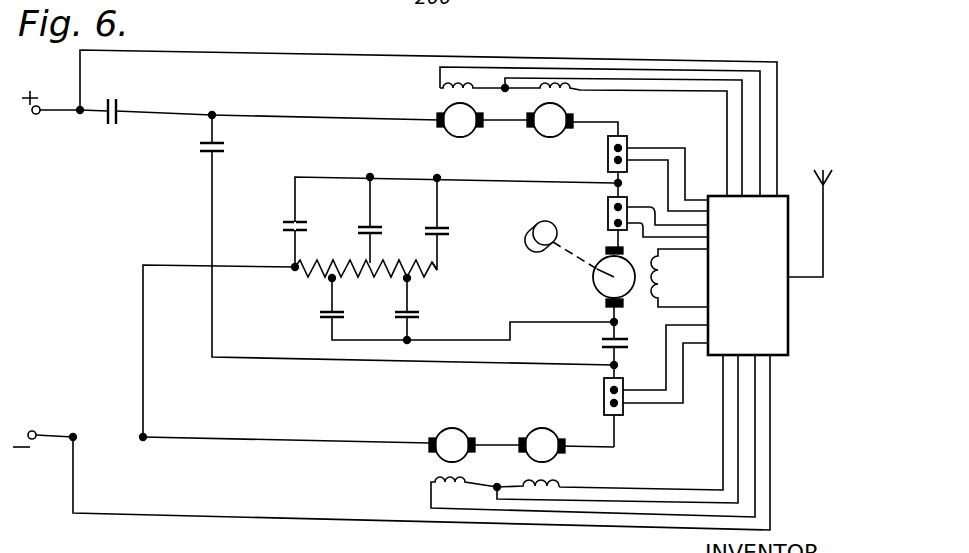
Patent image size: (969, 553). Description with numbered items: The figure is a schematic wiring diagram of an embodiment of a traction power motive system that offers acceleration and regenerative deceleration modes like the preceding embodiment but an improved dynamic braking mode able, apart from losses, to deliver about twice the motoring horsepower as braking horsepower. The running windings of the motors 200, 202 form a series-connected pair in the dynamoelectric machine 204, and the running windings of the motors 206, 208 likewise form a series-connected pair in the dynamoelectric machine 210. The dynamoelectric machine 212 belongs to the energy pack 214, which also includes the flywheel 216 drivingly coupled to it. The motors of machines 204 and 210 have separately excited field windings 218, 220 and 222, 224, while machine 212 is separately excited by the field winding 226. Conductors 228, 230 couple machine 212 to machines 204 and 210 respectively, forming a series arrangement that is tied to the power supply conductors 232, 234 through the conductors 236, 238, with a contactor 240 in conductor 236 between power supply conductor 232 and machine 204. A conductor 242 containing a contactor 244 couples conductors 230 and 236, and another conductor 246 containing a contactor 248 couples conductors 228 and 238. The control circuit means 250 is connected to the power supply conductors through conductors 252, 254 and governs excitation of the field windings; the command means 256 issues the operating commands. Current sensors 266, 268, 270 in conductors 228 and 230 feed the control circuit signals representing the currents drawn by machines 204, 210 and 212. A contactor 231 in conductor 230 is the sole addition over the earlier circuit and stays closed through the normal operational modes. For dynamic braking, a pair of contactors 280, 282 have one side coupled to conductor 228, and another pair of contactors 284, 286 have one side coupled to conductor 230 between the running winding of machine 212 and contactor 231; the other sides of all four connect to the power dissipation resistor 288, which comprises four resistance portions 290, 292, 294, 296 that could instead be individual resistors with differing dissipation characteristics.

The motor 200 is at (455, 135).
The motor 202 is at (536, 130).
The dynamoelectric machine 204 is at (580, 54).
The motor 206 is at (440, 424).
The motor 208 is at (545, 440).
The dynamoelectric machine 210 is at (410, 536).
The dynamoelectric machine 212 is at (592, 272).
The energy pack 214 is at (578, 296).
The flywheel 216 is at (520, 233).
The field winding 218 is at (438, 84).
The field winding 220 is at (570, 91).
The field winding 222 is at (434, 468).
The field winding 224 is at (565, 482).
The field winding 226 is at (655, 302).
The conductor 228 is at (620, 137).
The conductor 230 is at (605, 330).
The contactor 231 is at (620, 350).
The power supply conductor 232 is at (62, 115).
The power supply conductor 234 is at (50, 440).
The conductor 236 is at (300, 117).
The conductor 238 is at (228, 440).
The contactor 240 is at (118, 109).
The conductor 242 is at (212, 238).
The contactor 244 is at (200, 153).
The conductor 246 is at (143, 345).
The contactor 248 is at (292, 220).
The control circuit means 250 is at (770, 288).
The conductor 252 is at (256, 56).
The conductor 254 is at (120, 514).
The command means 256 is at (825, 233).
The current sensor 266 is at (608, 140).
The current sensor 268 is at (604, 392).
The current sensor 270 is at (608, 204).
The contactor 280 is at (365, 221).
The contactor 282 is at (432, 222).
The contactor 284 is at (414, 314).
The contactor 286 is at (340, 314).
The power dissipation resistor 288 is at (284, 284).
The resistance portion 290 is at (437, 272).
The resistance portion 292 is at (403, 258).
The resistance portion 294 is at (332, 258).
The resistance portion 296 is at (312, 282).